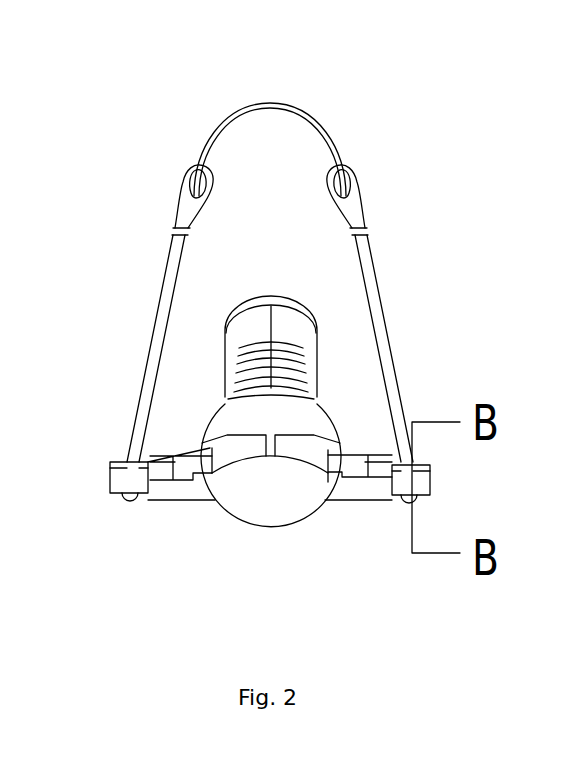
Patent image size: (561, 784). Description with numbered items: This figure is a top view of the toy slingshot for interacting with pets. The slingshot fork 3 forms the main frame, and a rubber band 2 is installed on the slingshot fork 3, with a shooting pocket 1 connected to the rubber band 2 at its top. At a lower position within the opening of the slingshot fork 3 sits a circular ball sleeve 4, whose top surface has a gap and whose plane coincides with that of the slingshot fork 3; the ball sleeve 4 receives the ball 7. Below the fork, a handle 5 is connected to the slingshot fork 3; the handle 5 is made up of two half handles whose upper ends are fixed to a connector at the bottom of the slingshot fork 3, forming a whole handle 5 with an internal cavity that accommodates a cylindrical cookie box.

The shooting pocket 1 is at (232, 116).
The rubber band 2 is at (172, 240).
The slingshot fork 3 is at (120, 479).
The ball sleeve 4 is at (195, 456).
The handle 5 is at (240, 343).
The ball 7 is at (225, 425).